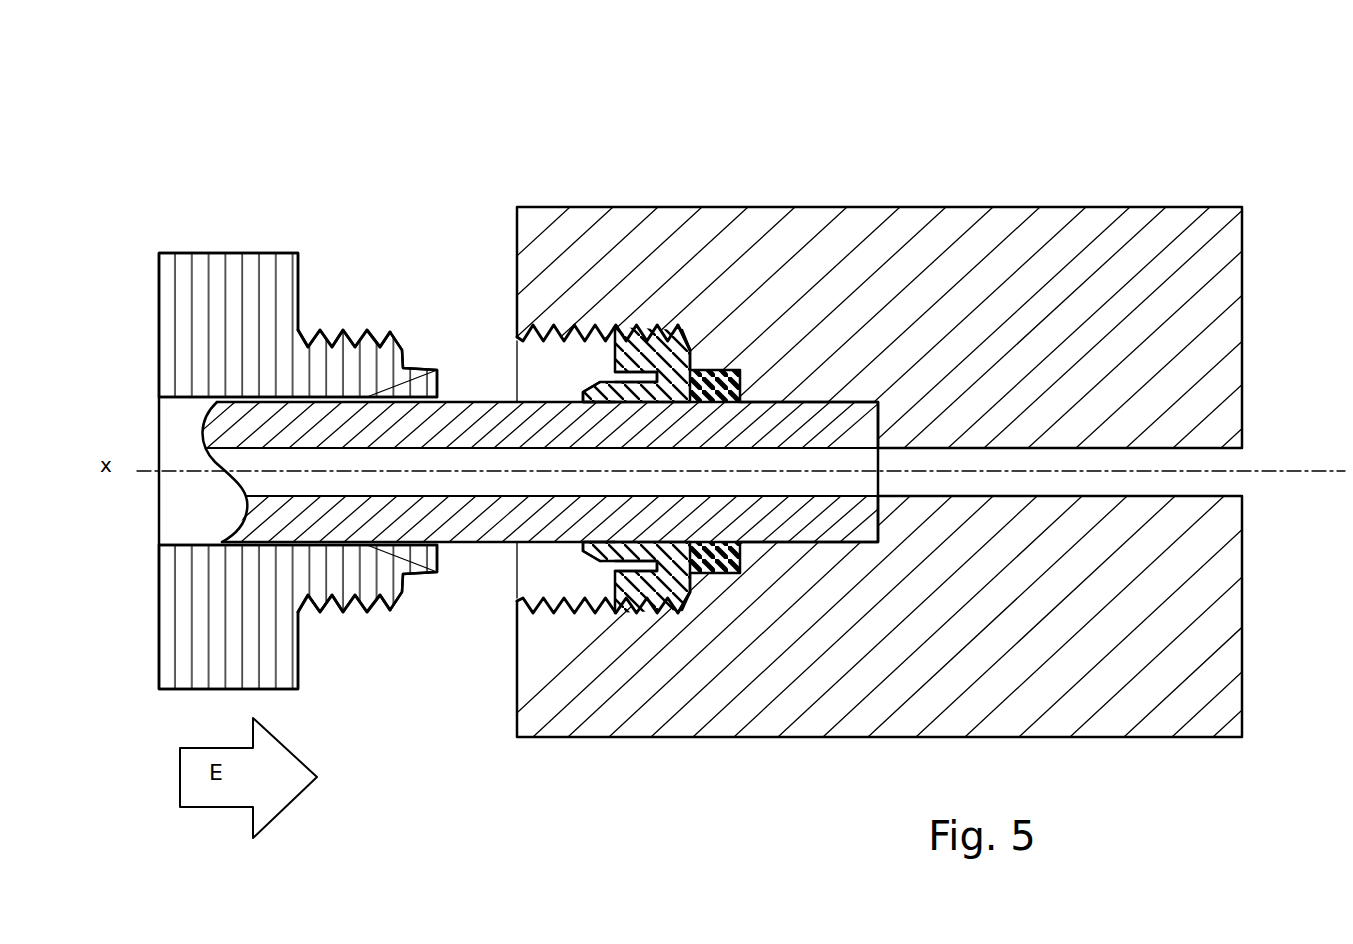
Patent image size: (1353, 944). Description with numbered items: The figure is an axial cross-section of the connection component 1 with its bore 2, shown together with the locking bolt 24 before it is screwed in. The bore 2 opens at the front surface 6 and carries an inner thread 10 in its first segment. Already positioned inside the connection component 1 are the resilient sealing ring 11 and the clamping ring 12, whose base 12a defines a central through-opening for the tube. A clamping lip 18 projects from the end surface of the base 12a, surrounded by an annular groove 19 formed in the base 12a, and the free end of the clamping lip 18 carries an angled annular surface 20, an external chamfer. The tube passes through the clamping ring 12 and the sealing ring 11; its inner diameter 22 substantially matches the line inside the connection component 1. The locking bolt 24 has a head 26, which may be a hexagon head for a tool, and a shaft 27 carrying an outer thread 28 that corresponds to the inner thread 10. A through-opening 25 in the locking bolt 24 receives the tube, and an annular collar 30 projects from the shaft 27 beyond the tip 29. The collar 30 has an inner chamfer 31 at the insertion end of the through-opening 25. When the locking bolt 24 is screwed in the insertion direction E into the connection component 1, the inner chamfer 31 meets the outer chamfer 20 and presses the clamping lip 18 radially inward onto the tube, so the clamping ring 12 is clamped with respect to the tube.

The connection component 1 is at (878, 206).
The bore 2 is at (559, 155).
The front surface 6 is at (476, 683).
The inner thread 10 is at (540, 390).
The sealing ring 11 is at (717, 578).
The clamping ring 12 is at (641, 327).
The base 12a is at (660, 593).
The clamping lip 18 is at (597, 558).
The annular groove 19 is at (635, 568).
The angled annular surface 20 is at (728, 113).
The inner diameter 22 is at (321, 496).
The locking bolt 24 is at (202, 253).
The through-opening 25 is at (176, 519).
The head 26 is at (178, 240).
The shaft 27 is at (346, 622).
The outer thread 28 is at (348, 320).
The tip 29 is at (436, 600).
The annular collar 30 is at (417, 346).
The inner chamfer 31 is at (449, 385).